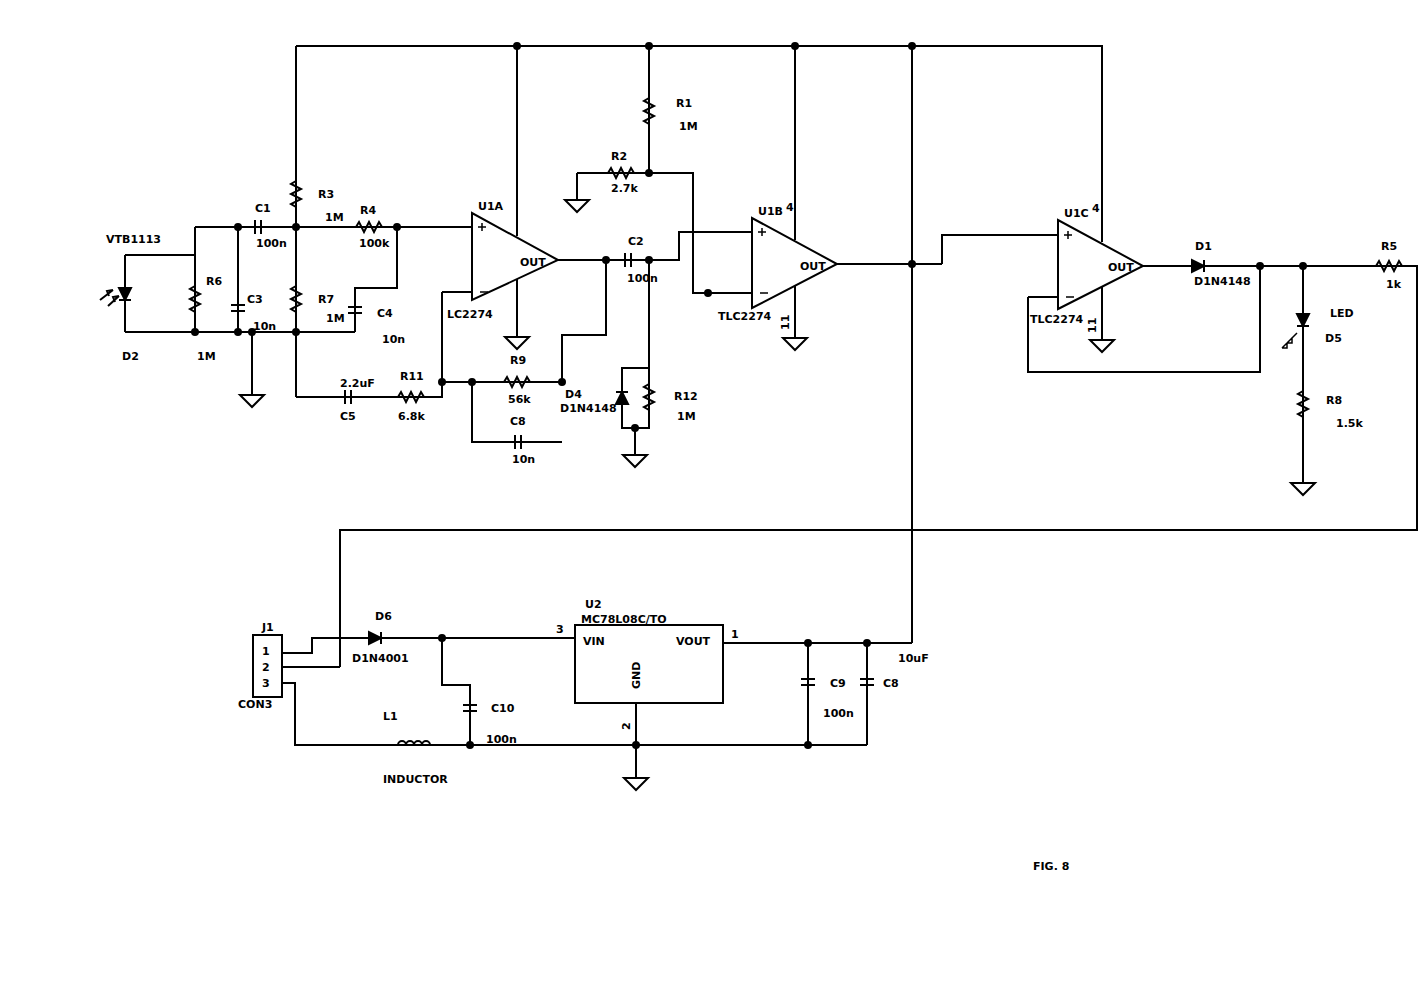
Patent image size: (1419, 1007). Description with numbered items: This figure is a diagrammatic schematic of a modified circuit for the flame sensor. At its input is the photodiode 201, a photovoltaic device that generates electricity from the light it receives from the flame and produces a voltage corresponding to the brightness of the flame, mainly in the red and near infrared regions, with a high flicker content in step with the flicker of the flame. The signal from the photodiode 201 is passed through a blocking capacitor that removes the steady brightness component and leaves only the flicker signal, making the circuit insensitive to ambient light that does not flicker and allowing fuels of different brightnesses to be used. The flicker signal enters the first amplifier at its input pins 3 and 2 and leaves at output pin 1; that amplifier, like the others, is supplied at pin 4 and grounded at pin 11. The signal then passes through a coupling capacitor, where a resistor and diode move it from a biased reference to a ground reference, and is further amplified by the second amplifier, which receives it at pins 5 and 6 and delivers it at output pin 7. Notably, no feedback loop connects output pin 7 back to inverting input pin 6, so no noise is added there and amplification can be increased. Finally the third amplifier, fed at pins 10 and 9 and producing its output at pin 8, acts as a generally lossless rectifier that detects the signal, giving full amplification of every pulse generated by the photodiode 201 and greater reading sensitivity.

The photodiode 201 is at (111, 333).
The op-amp U1A output pin 1 is at (582, 253).
The op-amp U1A inverting input pin 2 is at (457, 330).
The op-amp U1A non-inverting input pin 3 is at (457, 220).
The op-amp positive supply pin 4 is at (512, 141).
The op-amp U1B non-inverting input pin 5 is at (715, 225).
The op-amp U1B inverting input pin 6 is at (722, 286).
The op-amp U1B output pin 7 is at (889, 256).
The op-amp U1C output pin 8 is at (1156, 259).
The op-amp U1C inverting input pin 9 is at (1043, 290).
The op-amp U1C non-inverting input pin 10 is at (1043, 229).
The op-amp negative supply pin 11 is at (509, 308).